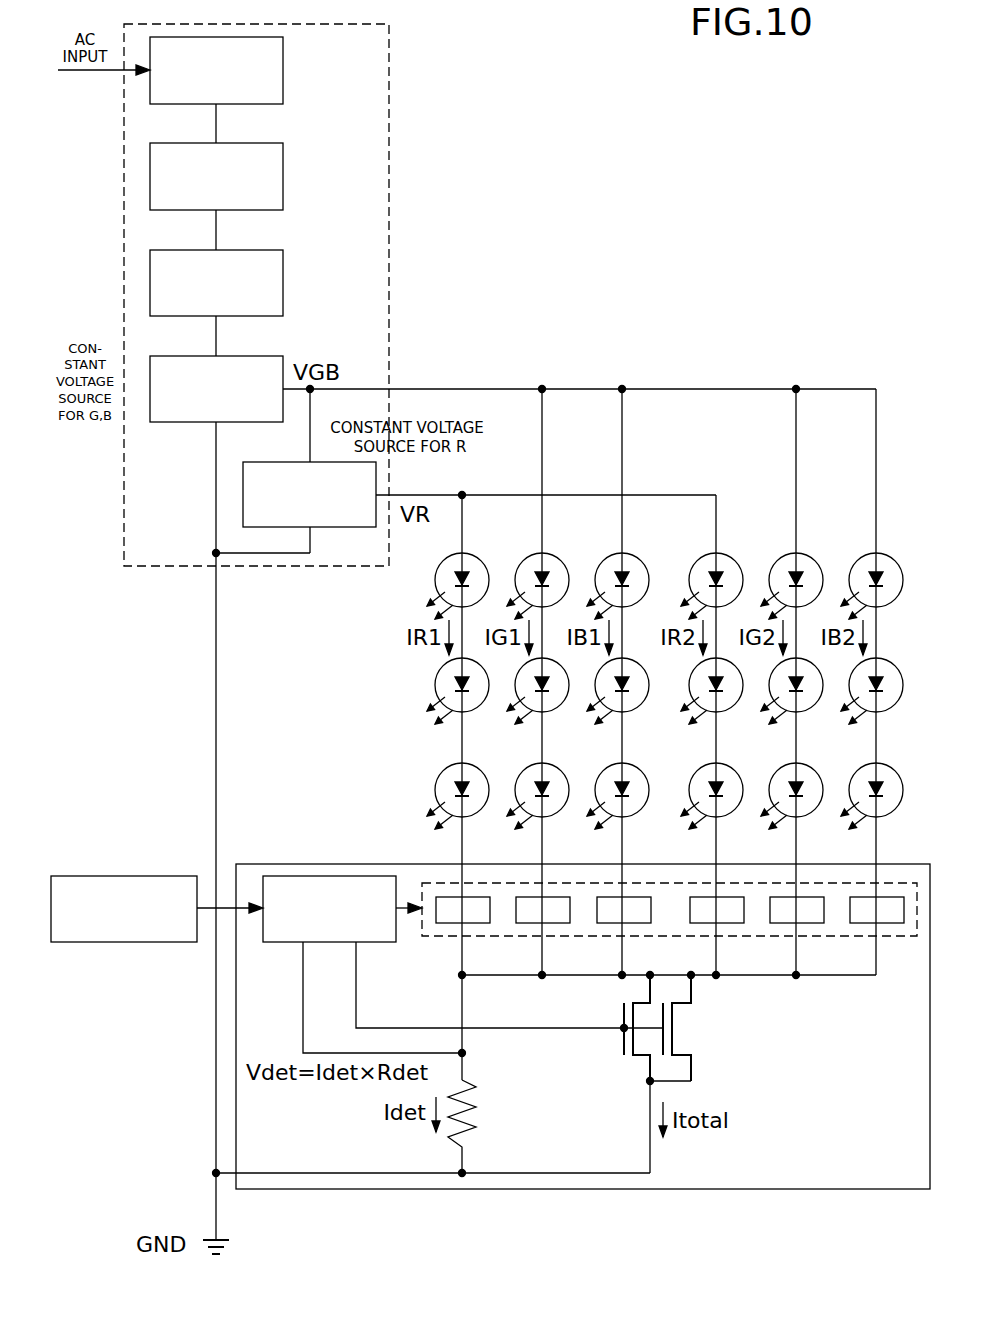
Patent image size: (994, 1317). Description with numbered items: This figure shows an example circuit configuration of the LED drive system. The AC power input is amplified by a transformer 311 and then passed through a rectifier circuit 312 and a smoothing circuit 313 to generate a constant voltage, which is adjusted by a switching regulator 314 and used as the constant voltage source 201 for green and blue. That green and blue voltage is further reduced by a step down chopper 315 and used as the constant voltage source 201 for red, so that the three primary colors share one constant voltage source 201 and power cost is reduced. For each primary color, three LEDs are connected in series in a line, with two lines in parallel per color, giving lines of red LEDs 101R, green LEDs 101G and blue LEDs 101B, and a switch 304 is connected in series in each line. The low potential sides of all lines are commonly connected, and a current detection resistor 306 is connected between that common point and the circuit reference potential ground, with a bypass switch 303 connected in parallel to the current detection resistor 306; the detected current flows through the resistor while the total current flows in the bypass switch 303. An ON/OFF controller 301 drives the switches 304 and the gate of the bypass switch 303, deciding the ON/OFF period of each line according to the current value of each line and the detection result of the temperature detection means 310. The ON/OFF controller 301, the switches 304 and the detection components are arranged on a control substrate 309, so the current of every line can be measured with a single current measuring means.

The constant voltage source 201 is at (389, 100).
The transformer 311 is at (283, 70).
The rectifier circuit 312 is at (283, 176).
The smoothing circuit 313 is at (283, 282).
The switching regulator 314 is at (162, 422).
The step down chopper 315 is at (345, 527).
The red LED 101R is at (700, 563).
The green LED 101G is at (780, 563).
The blue LED 101B is at (860, 563).
The temperature detection means 310 is at (122, 874).
The ON/OFF controller 301 is at (330, 876).
The switch 304 is at (728, 923).
The bypass switch 303 is at (690, 1035).
The current detection resistor 306 is at (480, 1130).
The control substrate 309 is at (805, 1190).